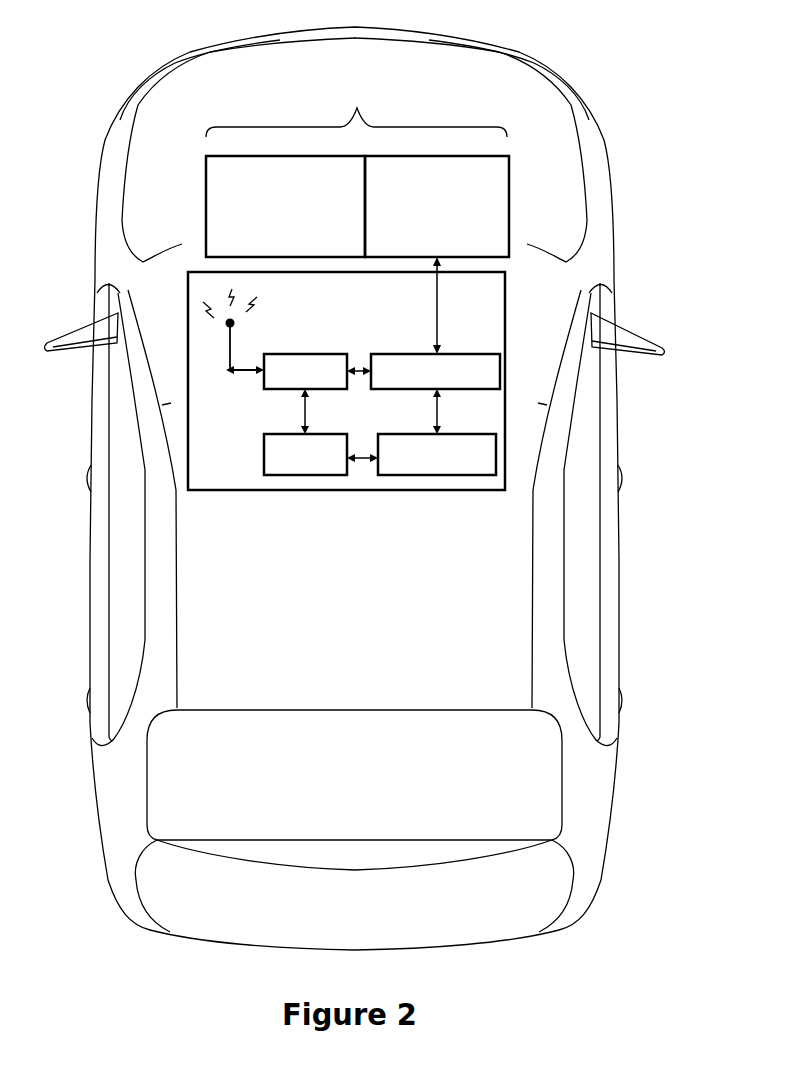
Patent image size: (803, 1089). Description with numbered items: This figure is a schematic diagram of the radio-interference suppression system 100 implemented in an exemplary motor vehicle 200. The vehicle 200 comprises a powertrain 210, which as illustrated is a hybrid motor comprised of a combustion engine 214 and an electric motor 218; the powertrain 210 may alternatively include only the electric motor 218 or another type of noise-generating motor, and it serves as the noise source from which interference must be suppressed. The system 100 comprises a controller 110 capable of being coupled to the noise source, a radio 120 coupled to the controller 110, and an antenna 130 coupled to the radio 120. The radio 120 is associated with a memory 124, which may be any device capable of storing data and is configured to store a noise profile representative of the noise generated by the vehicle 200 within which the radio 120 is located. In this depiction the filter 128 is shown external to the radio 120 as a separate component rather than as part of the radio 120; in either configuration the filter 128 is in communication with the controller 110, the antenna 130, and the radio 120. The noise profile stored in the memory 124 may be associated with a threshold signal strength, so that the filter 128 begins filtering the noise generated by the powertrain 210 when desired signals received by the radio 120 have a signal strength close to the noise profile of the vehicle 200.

The motor vehicle 200 is at (506, 88).
The powertrain 210 is at (359, 171).
The combustion engine 214 is at (206, 229).
The electric motor 218 is at (509, 214).
The system 100 is at (302, 400).
The controller 110 is at (492, 354).
The radio 120 is at (277, 434).
The memory 124 is at (453, 475).
The filter 128 is at (313, 354).
The antenna 130 is at (230, 367).